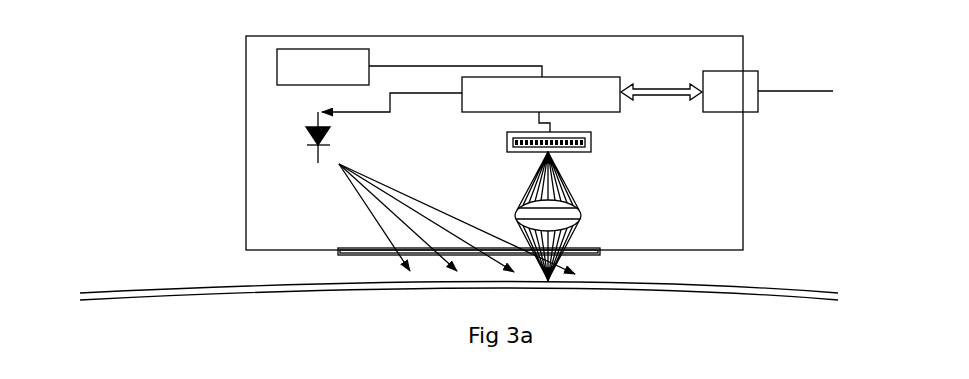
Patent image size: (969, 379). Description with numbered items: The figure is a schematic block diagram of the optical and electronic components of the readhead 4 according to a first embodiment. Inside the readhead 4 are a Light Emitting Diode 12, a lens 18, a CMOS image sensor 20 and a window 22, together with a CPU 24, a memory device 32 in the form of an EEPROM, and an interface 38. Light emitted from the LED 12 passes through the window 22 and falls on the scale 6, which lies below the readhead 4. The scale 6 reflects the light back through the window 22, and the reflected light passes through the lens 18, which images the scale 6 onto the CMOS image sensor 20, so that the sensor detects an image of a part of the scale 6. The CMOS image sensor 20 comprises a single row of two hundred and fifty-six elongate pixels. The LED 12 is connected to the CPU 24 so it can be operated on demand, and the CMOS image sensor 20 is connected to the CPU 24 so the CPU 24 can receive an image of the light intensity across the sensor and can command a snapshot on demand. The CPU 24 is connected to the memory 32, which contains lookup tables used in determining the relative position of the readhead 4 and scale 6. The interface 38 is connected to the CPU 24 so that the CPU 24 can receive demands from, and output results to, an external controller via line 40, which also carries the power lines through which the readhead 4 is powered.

The readhead 4 is at (240, 154).
The scale 6 is at (121, 271).
The Light Emitting Diode (LED) 12 is at (333, 136).
The lens 18 is at (594, 212).
The CMOS image sensor 20 is at (594, 139).
The window 22 is at (352, 246).
The CPU 24 is at (541, 94).
The memory device 32 is at (323, 67).
The interface 38 is at (730, 91).
The line 40 is at (806, 102).